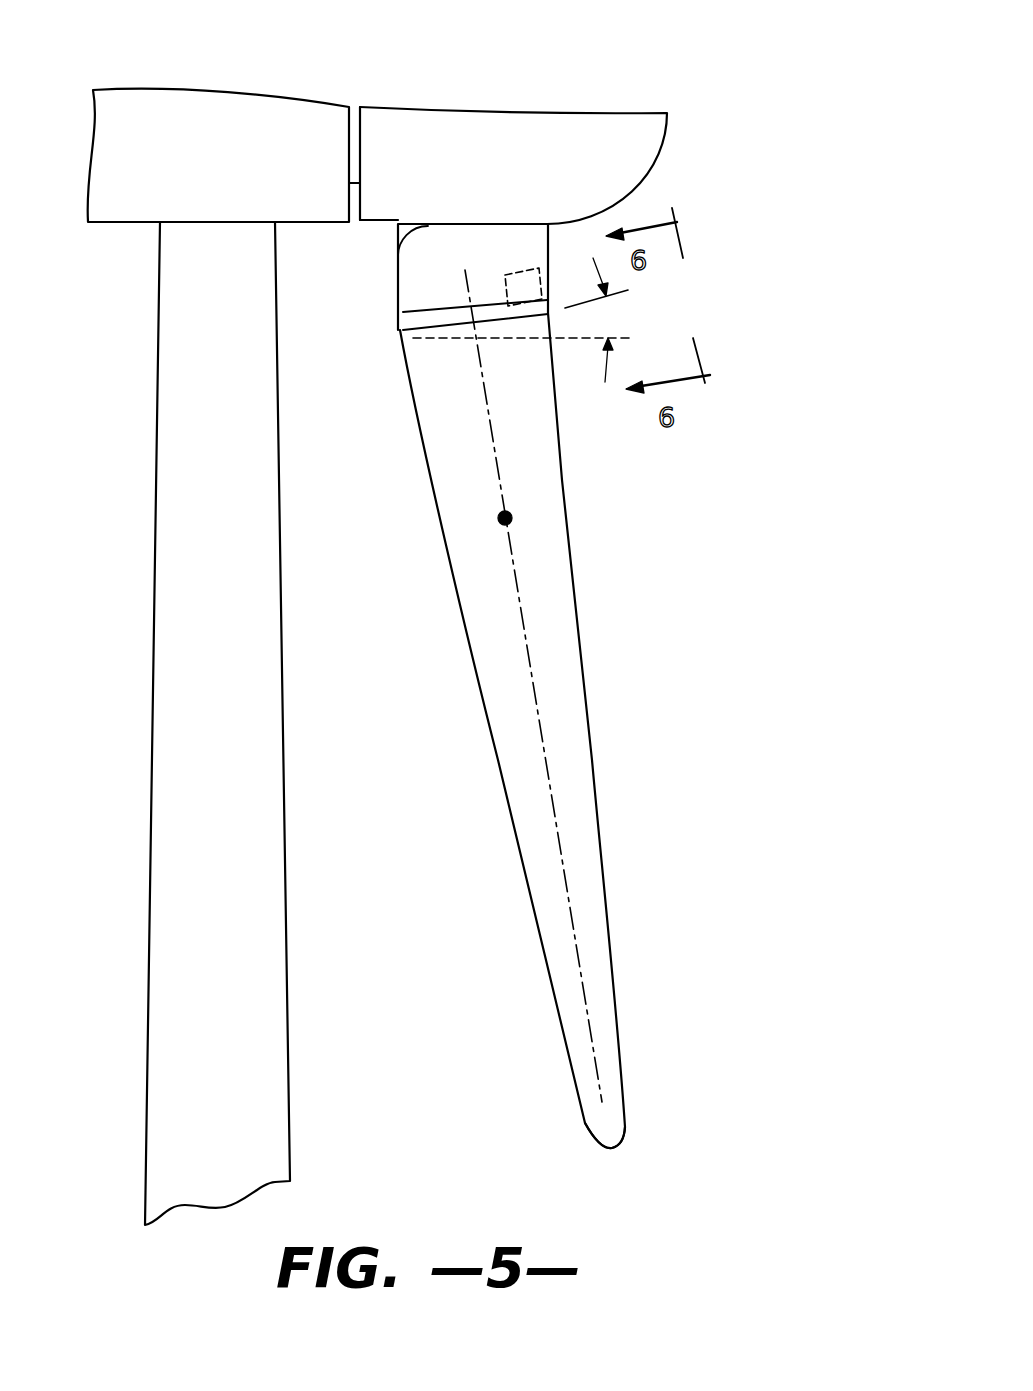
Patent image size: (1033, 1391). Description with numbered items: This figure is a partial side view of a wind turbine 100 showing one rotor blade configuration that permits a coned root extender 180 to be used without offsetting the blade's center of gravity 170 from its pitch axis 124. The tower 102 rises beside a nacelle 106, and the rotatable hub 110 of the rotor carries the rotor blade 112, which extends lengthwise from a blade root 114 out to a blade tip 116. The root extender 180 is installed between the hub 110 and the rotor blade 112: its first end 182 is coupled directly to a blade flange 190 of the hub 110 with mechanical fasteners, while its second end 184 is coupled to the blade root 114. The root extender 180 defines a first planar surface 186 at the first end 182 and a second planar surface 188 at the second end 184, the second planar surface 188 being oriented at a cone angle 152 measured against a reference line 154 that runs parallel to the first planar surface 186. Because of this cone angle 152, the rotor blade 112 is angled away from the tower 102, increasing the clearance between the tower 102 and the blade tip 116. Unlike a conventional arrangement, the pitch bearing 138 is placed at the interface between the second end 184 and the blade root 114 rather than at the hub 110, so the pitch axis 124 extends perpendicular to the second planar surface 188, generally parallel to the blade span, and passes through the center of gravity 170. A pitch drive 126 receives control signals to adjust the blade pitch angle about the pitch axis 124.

The wind turbine 100 is at (627, 79).
The tower 102 is at (283, 685).
The nacelle 106 is at (242, 172).
The rotatable hub 110 is at (658, 160).
The rotor blade 112 is at (604, 862).
The blade root 114 is at (418, 353).
The blade tip 116 is at (612, 1148).
The pitch axis 124 is at (525, 633).
The pitch drive 126 is at (520, 270).
The pitch bearing 138 is at (400, 337).
The cone angle 152 is at (610, 372).
The reference line 154 is at (580, 338).
The center of gravity 170 is at (510, 513).
The root extender 180 is at (378, 304).
The first end 182 is at (400, 250).
The second end 184 is at (414, 317).
The first planar surface 186 is at (417, 262).
The second planar surface 188 is at (398, 326).
The blade flange 190 is at (547, 223).